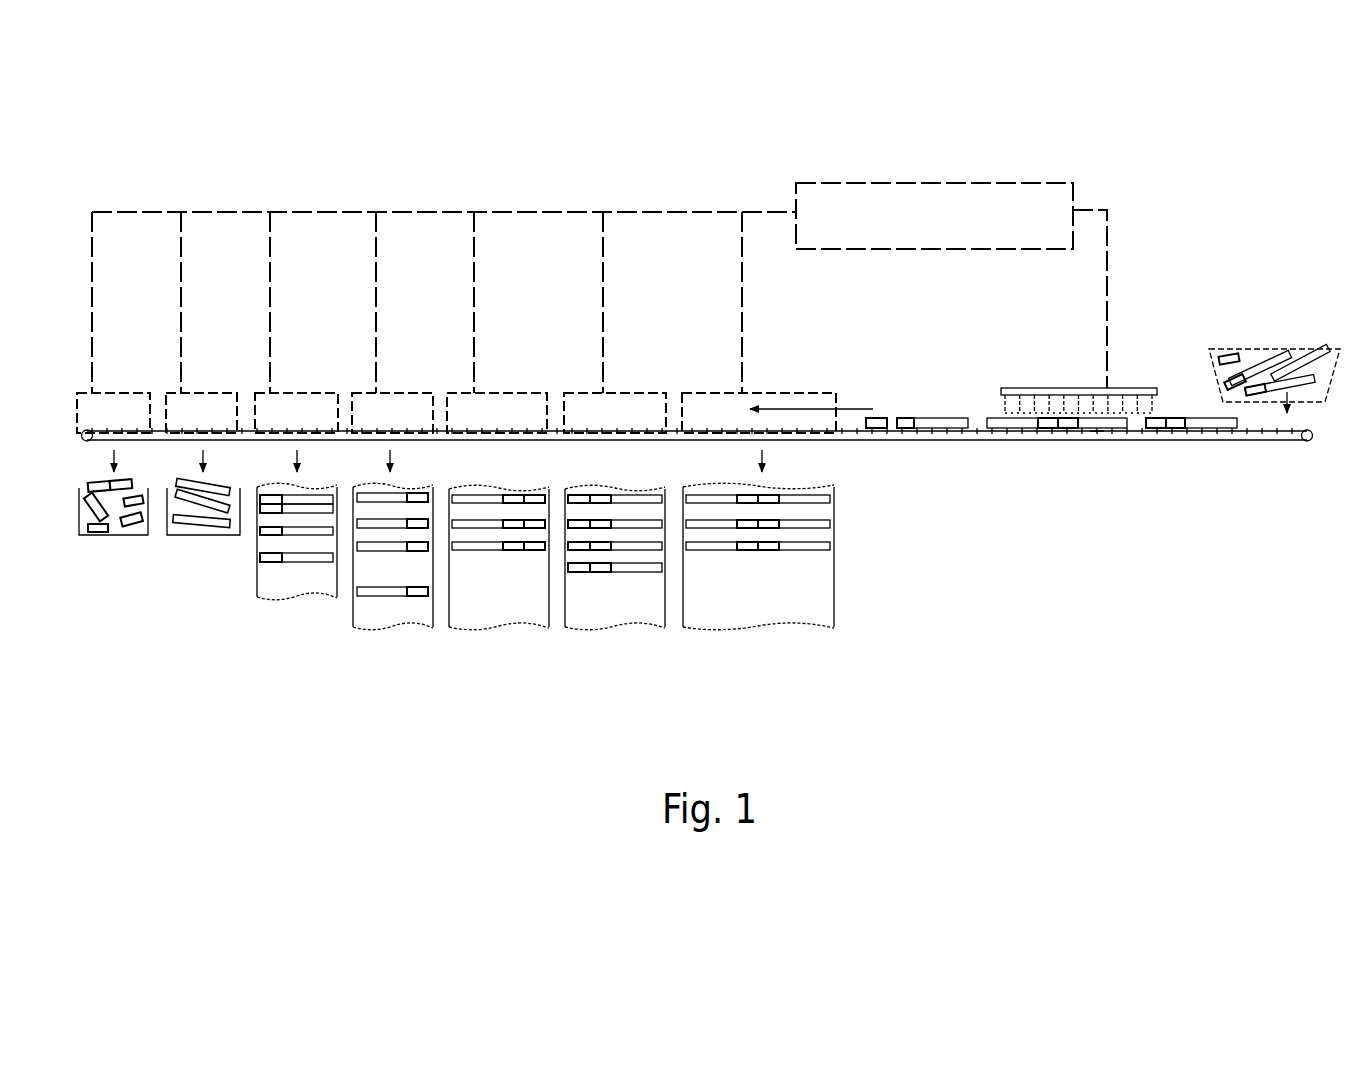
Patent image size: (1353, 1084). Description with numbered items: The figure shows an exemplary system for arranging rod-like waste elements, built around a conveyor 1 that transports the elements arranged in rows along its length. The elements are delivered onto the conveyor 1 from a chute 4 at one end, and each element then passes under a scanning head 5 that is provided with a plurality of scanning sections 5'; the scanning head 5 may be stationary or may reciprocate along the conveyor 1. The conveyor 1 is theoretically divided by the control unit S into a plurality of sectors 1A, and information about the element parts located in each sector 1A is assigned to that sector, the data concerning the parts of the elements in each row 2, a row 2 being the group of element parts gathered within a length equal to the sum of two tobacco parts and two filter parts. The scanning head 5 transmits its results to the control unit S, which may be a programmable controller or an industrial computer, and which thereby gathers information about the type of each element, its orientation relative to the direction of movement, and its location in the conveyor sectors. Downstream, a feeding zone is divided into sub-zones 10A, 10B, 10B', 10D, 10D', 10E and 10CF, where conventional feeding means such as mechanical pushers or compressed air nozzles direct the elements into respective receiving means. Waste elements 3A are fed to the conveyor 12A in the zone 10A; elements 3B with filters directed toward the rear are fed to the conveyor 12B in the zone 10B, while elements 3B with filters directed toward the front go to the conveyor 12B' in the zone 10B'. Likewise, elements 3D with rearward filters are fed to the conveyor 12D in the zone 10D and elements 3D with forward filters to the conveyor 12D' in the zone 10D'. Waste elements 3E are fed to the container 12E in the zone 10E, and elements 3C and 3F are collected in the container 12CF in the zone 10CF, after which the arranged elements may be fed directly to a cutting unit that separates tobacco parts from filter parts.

The conveyor 1 is at (1260, 431).
The sector 1A is at (1097, 431).
The row 2 is at (902, 400).
The chute 4 is at (1240, 351).
The scanning head 5 is at (1079, 349).
The scanning section 5' is at (1057, 375).
The control unit S is at (951, 285).
The zone 10A is at (788, 400).
The zone 10B is at (506, 384).
The zone 10B' is at (632, 384).
The zone 10D is at (403, 384).
The zone 10D' is at (305, 384).
The zone 10E is at (196, 400).
The zone 10CF is at (165, 360).
The conveyor 12A is at (820, 605).
The conveyor 12B is at (507, 603).
The conveyor 12B' is at (633, 591).
The conveyor 12D is at (415, 589).
The conveyor 12D' is at (292, 591).
The container 12E is at (214, 537).
The container 12CF is at (138, 535).
The waste elements 3A is at (797, 547).
The elements 3B is at (637, 567).
The elements 3D is at (397, 547).
The waste elements 3E is at (198, 520).
The elements 3C is at (122, 497).
The elements 3F is at (131, 527).